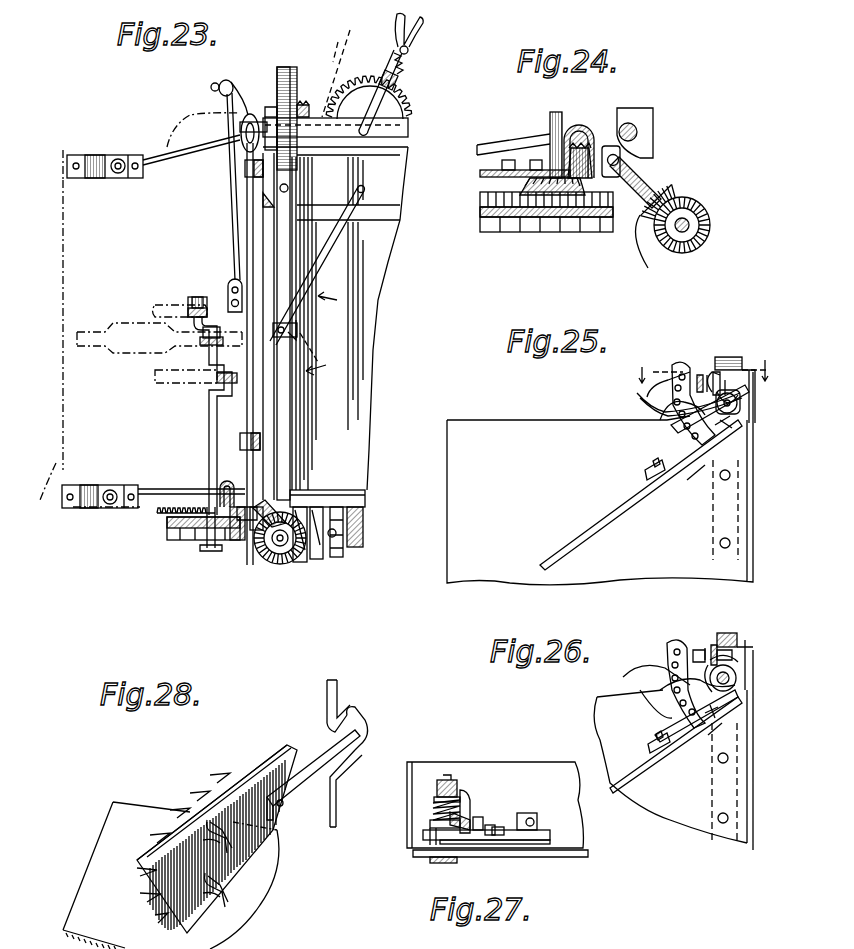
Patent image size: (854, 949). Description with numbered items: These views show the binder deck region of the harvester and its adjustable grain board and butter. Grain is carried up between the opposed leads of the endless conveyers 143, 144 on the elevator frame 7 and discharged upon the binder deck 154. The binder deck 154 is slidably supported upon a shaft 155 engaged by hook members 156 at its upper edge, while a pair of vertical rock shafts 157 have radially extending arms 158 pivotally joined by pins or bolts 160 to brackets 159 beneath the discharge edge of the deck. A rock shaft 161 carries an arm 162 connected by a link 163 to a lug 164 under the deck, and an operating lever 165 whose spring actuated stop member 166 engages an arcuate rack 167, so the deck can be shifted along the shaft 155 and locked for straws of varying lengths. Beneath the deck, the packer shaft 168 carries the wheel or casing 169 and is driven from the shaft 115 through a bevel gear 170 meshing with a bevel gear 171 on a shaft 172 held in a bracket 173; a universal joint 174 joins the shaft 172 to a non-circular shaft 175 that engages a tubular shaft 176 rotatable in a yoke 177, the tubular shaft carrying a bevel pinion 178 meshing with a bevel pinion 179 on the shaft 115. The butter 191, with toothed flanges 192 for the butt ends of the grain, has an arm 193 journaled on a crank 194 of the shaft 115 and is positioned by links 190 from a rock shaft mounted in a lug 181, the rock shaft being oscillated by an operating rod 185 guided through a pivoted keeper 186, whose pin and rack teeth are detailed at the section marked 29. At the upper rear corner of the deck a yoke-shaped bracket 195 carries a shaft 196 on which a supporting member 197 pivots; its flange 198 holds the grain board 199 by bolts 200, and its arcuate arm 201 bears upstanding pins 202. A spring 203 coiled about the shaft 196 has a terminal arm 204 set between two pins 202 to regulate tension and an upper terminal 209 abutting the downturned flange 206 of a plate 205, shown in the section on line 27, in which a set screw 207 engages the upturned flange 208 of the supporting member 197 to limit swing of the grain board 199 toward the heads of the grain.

In FIG. 23, the elevator frame 7 is at (355, 508).
In FIG. 25, the section line 27— 27 is at (702, 372).
In FIG. 23, the section indication for Fig. 29 is at (325, 333).
In FIG. 23, the shaft 115 is at (296, 556).
In FIG. 24, the shaft 115 is at (690, 232).
In FIG. 28, the shaft 115 is at (338, 690).
In FIG. 23, the endless conveyer 143 is at (395, 186).
In FIG. 23, the endless conveyer 144 is at (375, 272).
In FIG. 23, the binder deck 154 is at (55, 500).
In FIG. 25, the binder deck 154 is at (467, 437).
In FIG. 26, the binder deck 154 is at (675, 822).
In FIG. 28, the binder deck 154 is at (225, 917).
In FIG. 23, the shaft 155 is at (246, 235).
In FIG. 23, the hook members 156 is at (244, 168).
In FIG. 23, the rock shafts 157 is at (262, 110).
In FIG. 24, the rock shafts 157 is at (640, 125).
In FIG. 23, the radially extending arms 158 is at (160, 168).
In FIG. 24, the radially extending arms 158 is at (508, 145).
In FIG. 23, the brackets 159 is at (96, 180).
In FIG. 23, the pins or bolts 160 is at (118, 158).
In FIG. 23, the rock shaft 161 is at (340, 73).
In FIG. 23, the radially extending arm 162 is at (243, 110).
In FIG. 23, the link 163 is at (232, 210).
In FIG. 23, the lug 164 is at (232, 283).
In FIG. 23, the operating arm or lever 165 is at (404, 106).
In FIG. 23, the spring actuated stop member 166 is at (402, 82).
In FIG. 23, the arcuate rack 167 is at (360, 88).
In FIG. 23, the packer shaft 168 is at (208, 410).
In FIG. 23, the wheel or casing 169 is at (168, 535).
In FIG. 24, the wheel or casing 169 is at (535, 233).
In FIG. 23, the bevel gear 170 is at (160, 517).
In FIG. 24, the bevel gear 170 is at (520, 187).
In FIG. 23, the bevel gear 171 is at (226, 484).
In FIG. 24, the bevel gear 171 is at (580, 130).
In FIG. 24, the shaft 172 is at (632, 122).
In FIG. 24, the bracket 173 is at (592, 135).
In FIG. 24, the universal joint 174 is at (625, 155).
In FIG. 24, the non-circular shaft 175 is at (640, 175).
In FIG. 24, the tubular shaft 176 is at (640, 218).
In FIG. 23, the yoke 177 is at (275, 548).
In FIG. 24, the yoke 177 is at (648, 268).
In FIG. 23, the bevel pinion 178 is at (262, 530).
In FIG. 24, the bevel pinion 178 is at (678, 198).
In FIG. 23, the bevel pinion 179 is at (283, 566).
In FIG. 24, the bevel pinion 179 is at (710, 222).
In FIG. 23, the lug or bracket 181 is at (283, 320).
In FIG. 23, the operating rod 185 is at (335, 245).
In FIG. 23, the keeper 186 is at (290, 333).
In FIG. 28, the link or links 190 is at (228, 895).
In FIG. 28, the butter 191 is at (237, 775).
In FIG. 28, the toothed flanges 192 is at (178, 815).
In FIG. 28, the arm 193 is at (310, 775).
In FIG. 28, the crank 194 is at (365, 715).
In FIG. 25, the yoke-shaped bracket 195 is at (738, 357).
In FIG. 26, the yoke-shaped bracket 195 is at (730, 633).
In FIG. 25, the shaft 196 is at (726, 382).
In FIG. 26, the shaft 196 is at (735, 668).
In FIG. 27, the shaft 196 is at (446, 778).
In FIG. 25, the supporting member 197 is at (671, 427).
In FIG. 26, the supporting member 197 is at (678, 725).
In FIG. 27, the supporting member 197 is at (535, 840).
In FIG. 25, the flange 198 is at (647, 478).
In FIG. 26, the flange 198 is at (650, 750).
In FIG. 27, the flange 198 is at (535, 813).
In FIG. 25, the grain board 199 is at (612, 520).
In FIG. 26, the grain board 199 is at (632, 780).
In FIG. 27, the grain board 199 is at (553, 752).
In FIG. 25, the bolts 200 is at (695, 480).
In FIG. 26, the bolts 200 is at (668, 757).
In FIG. 25, the arcuate arm 201 is at (672, 365).
In FIG. 26, the arcuate arm 201 is at (667, 643).
In FIG. 27, the arcuate arm 201 is at (498, 838).
In FIG. 25, the upstanding pins 202 is at (647, 397).
In FIG. 26, the upstanding pins 202 is at (668, 705).
In FIG. 27, the upstanding pins 202 is at (488, 835).
In FIG. 25, the spring 203 is at (745, 420).
In FIG. 26, the spring 203 is at (738, 680).
In FIG. 27, the spring 203 is at (433, 808).
In FIG. 25, the terminal arm 204 is at (660, 420).
In FIG. 26, the terminal arm 204 is at (655, 672).
In FIG. 27, the terminal arm 204 is at (510, 838).
In FIG. 27, the plate 205 is at (434, 798).
In FIG. 25, the downturned flange 206 is at (707, 375).
In FIG. 26, the downturned flange 206 is at (708, 648).
In FIG. 27, the downturned flange 206 is at (472, 805).
In FIG. 25, the set screw 207 is at (705, 378).
In FIG. 26, the set screw 207 is at (697, 650).
In FIG. 27, the set screw 207 is at (480, 815).
In FIG. 26, the upturned flange 208 is at (734, 652).
In FIG. 27, the upturned flange 208 is at (430, 824).
In FIG. 25, the upper terminal 209 is at (698, 375).
In FIG. 27, the upper terminal 209 is at (468, 790).